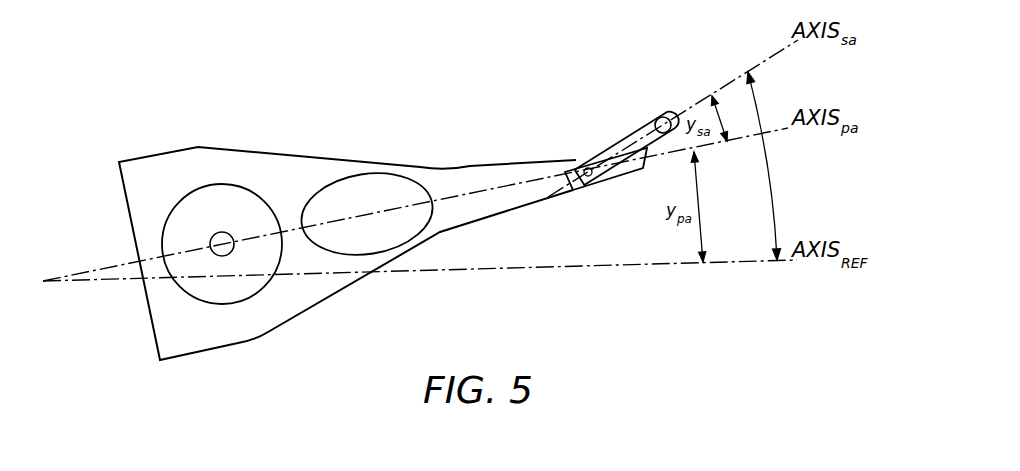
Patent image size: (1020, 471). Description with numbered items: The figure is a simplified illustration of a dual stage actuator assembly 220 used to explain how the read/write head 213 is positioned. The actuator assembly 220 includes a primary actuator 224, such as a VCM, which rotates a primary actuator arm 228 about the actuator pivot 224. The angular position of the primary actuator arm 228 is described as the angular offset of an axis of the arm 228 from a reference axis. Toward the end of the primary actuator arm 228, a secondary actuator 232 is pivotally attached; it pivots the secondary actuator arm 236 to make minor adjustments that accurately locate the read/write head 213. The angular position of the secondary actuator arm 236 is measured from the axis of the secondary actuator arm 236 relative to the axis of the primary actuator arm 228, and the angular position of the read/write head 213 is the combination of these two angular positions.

The dual stage actuator assembly 220 is at (240, 108).
The primary actuator 224 is at (256, 293).
The primary actuator arm 228 is at (505, 160).
The secondary actuator 232 is at (580, 163).
The secondary actuator arm 236 is at (647, 120).
The read/write head 213 is at (669, 117).